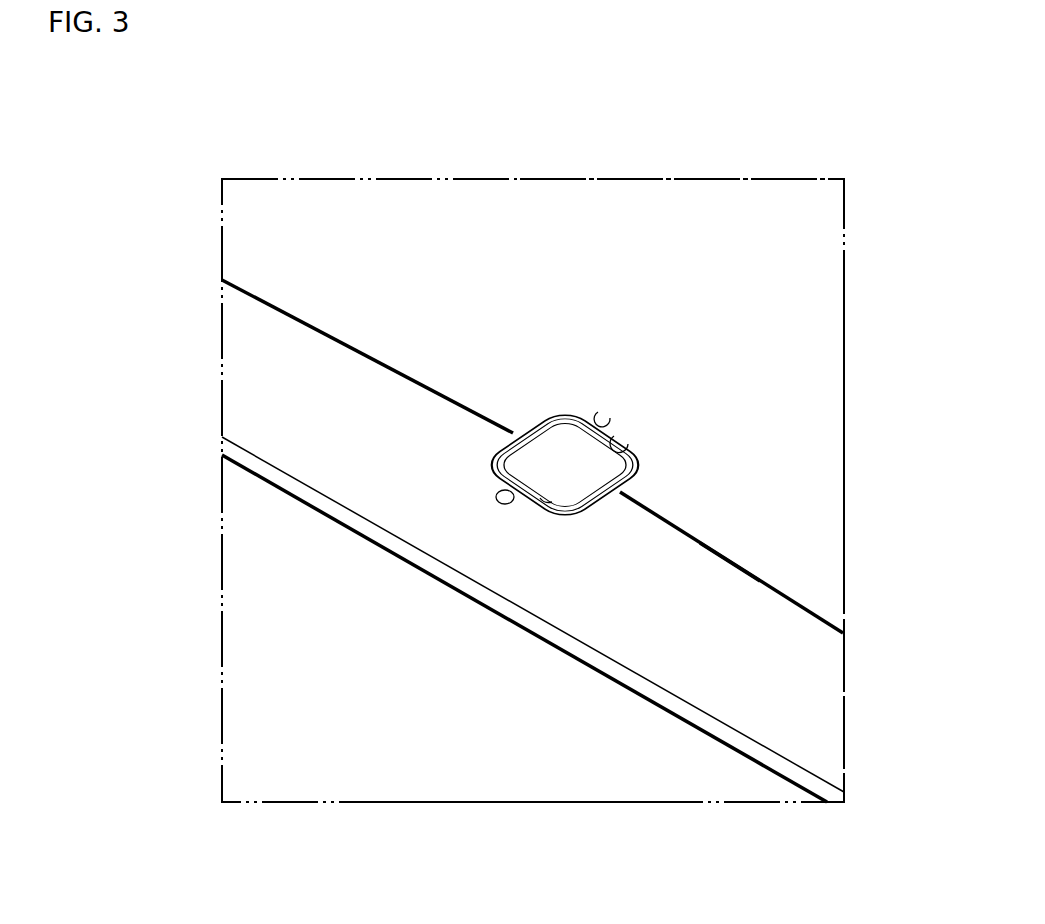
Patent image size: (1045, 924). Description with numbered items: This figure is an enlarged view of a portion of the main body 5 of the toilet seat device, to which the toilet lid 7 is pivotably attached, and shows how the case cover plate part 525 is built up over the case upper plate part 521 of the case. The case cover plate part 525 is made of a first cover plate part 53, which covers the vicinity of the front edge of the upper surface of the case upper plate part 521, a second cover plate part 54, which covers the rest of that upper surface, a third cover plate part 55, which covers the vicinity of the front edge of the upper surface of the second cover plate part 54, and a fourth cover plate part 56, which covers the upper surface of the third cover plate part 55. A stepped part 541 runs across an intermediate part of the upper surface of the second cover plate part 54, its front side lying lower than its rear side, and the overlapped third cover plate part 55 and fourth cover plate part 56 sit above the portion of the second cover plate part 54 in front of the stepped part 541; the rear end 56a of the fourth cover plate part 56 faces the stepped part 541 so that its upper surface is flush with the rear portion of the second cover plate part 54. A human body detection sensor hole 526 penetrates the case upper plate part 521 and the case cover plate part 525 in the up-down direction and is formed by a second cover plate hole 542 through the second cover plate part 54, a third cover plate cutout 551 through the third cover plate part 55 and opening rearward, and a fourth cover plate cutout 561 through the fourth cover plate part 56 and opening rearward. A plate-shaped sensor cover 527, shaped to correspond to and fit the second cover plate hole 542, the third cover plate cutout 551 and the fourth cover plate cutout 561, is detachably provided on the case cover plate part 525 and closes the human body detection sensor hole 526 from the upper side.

The main body 5 is at (245, 193).
The case upper plate part 521 is at (337, 200).
The case cover plate part 525 is at (572, 200).
The sensor cover 527 is at (548, 437).
The second cover plate hole 542 is at (608, 418).
The human body detection sensor hole 526 is at (628, 444).
The second cover plate part 54 is at (815, 438).
The rear end 56a is at (740, 570).
The stepped part 541 is at (792, 598).
The fourth cover plate part 56 is at (820, 663).
The third cover plate part 55 is at (808, 713).
The fourth cover plate cutout 561 is at (507, 503).
The third cover plate cutout 551 is at (556, 525).
The toilet lid 7 is at (542, 778).
The first cover plate part 53 is at (745, 778).